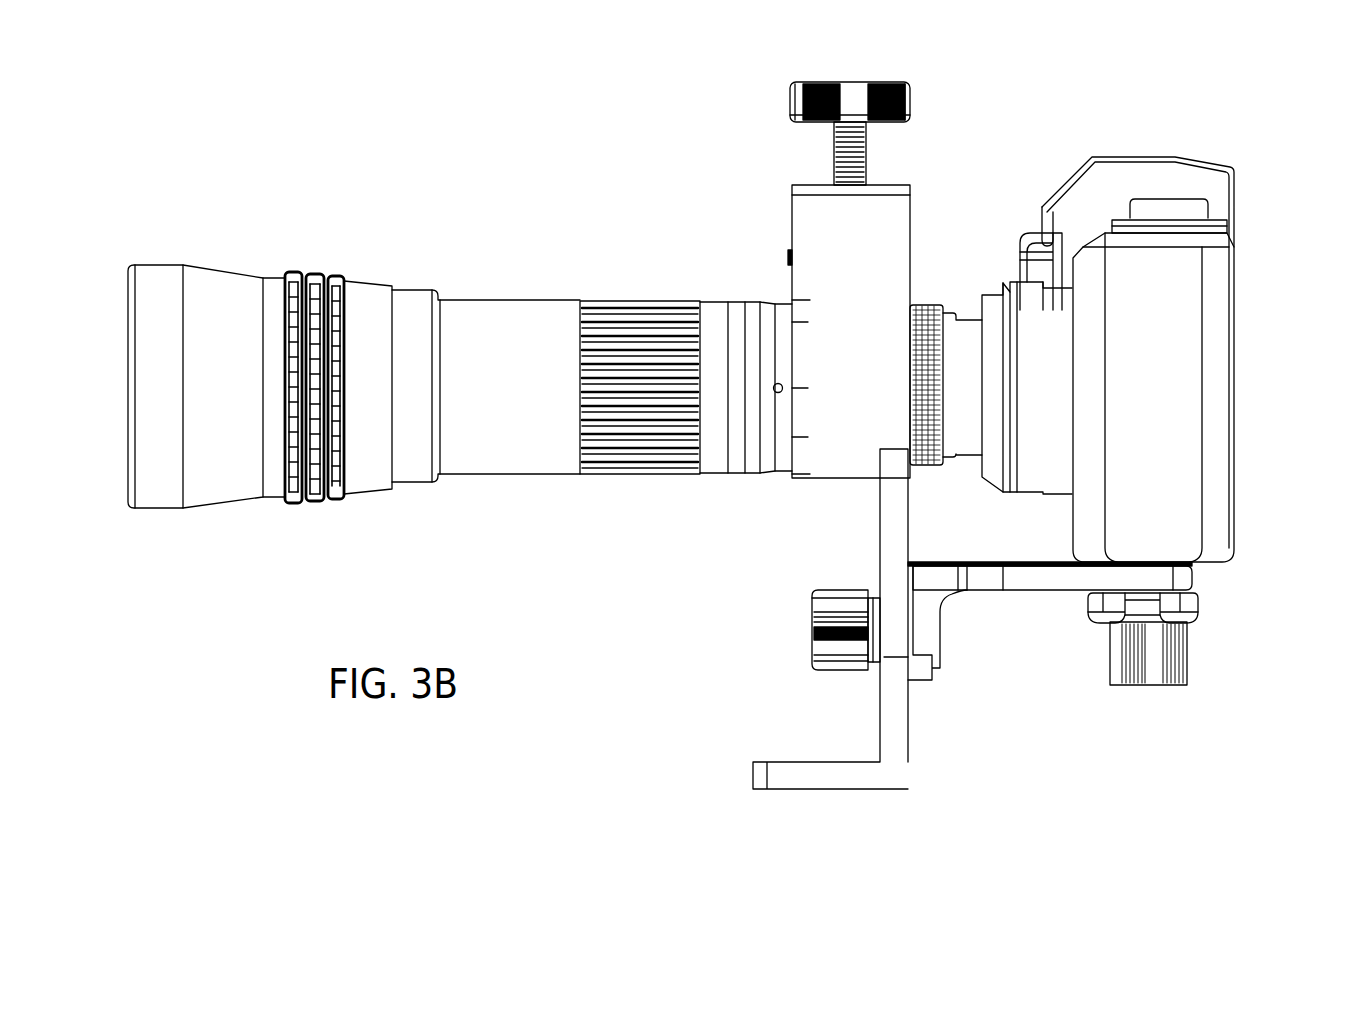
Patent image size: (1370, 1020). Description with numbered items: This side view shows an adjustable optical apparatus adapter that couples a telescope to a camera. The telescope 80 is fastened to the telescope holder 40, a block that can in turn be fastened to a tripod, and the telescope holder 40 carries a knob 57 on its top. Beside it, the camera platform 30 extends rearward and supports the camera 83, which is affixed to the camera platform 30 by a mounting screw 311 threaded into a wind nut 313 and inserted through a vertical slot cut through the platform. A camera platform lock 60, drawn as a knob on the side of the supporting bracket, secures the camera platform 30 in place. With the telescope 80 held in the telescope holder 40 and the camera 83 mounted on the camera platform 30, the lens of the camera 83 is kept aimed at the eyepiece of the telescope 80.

The camera platform 30 is at (1193, 573).
The telescope holder 40 is at (913, 186).
The locking knob 57 is at (909, 84).
The camera platform lock 60 is at (811, 635).
The telescope 80 is at (488, 298).
The camera 83 is at (1175, 157).
The mounting screw 311 is at (1187, 685).
The wind nut 313 is at (1200, 618).